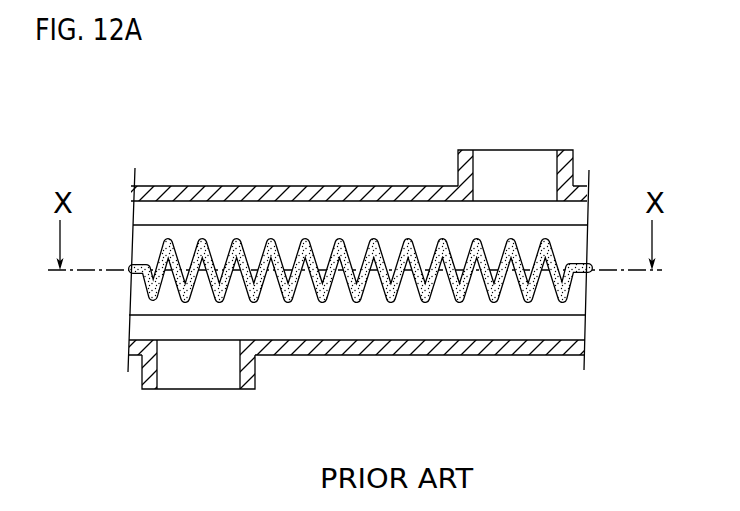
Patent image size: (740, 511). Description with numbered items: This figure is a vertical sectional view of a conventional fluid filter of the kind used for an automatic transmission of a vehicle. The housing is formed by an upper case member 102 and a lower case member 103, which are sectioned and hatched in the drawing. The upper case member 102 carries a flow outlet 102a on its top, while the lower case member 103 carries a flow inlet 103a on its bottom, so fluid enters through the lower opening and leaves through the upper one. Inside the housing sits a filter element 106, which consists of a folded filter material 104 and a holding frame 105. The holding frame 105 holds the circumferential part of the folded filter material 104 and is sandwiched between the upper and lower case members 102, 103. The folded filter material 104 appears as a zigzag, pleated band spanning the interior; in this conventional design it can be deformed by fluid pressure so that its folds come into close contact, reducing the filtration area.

The upper case member 102 is at (359, 138).
The flow outlet 102a is at (495, 146).
The lower case member 103 is at (357, 403).
The flow inlet 103a is at (223, 391).
The folded filter material 104 is at (182, 250).
The holding frame 105 is at (263, 222).
The filter element 106 is at (280, 141).